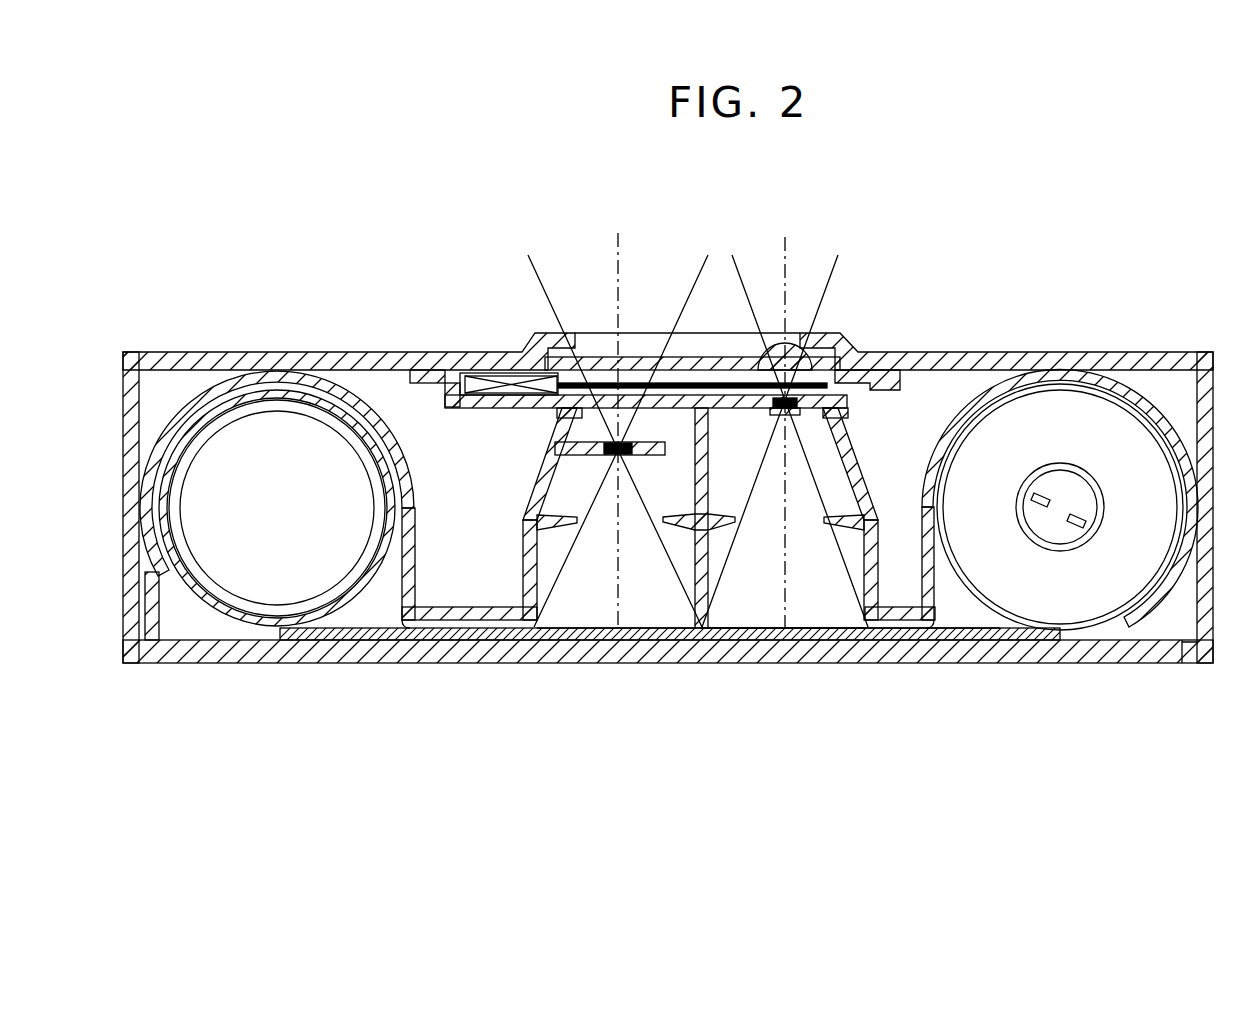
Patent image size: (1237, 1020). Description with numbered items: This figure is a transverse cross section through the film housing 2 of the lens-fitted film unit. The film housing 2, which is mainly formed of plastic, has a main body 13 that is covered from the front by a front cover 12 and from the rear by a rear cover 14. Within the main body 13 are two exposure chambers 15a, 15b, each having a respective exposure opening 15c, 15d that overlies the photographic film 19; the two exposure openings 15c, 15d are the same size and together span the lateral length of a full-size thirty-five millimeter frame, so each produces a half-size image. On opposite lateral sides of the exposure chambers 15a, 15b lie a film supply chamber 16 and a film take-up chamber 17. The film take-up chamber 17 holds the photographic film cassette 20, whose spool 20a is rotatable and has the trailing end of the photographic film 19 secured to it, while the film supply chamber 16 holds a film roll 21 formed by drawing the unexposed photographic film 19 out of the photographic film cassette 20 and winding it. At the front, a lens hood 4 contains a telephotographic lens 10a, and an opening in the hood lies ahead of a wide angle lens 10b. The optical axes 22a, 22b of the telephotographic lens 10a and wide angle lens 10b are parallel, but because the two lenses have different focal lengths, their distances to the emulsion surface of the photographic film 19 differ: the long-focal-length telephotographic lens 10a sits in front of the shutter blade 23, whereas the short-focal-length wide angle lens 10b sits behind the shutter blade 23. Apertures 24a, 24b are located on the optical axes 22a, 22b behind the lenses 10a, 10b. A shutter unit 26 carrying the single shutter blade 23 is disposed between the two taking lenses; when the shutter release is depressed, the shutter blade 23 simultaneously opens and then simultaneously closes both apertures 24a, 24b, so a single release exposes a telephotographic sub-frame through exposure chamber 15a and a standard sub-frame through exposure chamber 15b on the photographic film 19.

The film housing 2 is at (323, 312).
The lens hood 4 is at (850, 348).
The telephotographic lens 10a is at (775, 352).
The wide angle lens 10b is at (643, 353).
The front cover 12 is at (1115, 340).
The main body 13 is at (875, 458).
The rear cover 14 is at (1156, 678).
The exposure chamber 15a is at (755, 590).
The exposure chamber 15b is at (590, 600).
The exposure opening 15c is at (850, 634).
The exposure opening 15d is at (652, 625).
The film supply chamber 16 is at (378, 605).
The film take-up chamber 17 is at (952, 605).
The photographic film 19 is at (795, 640).
The photographic film cassette 20 is at (1095, 600).
The spool 20a is at (1042, 548).
The film roll 21 is at (234, 597).
The optical axis 22a is at (786, 275).
The optical axis 22b is at (617, 283).
The shutter blade 23 is at (708, 352).
The aperture 24a is at (778, 412).
The aperture 24b is at (612, 452).
The shutter unit 26 is at (508, 376).